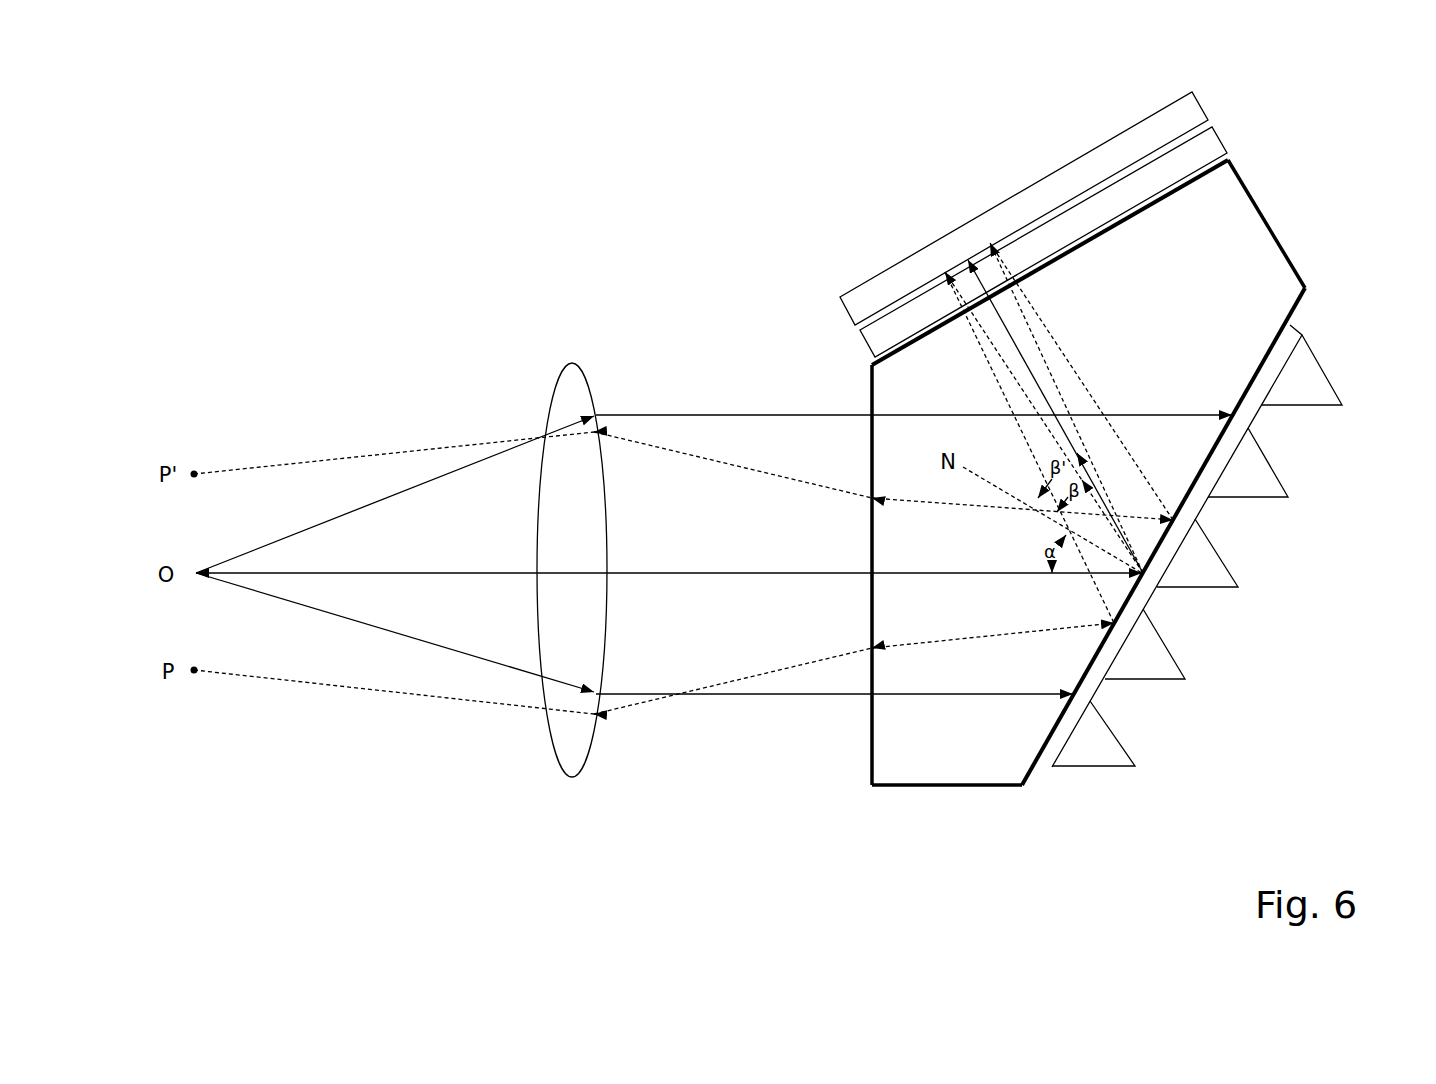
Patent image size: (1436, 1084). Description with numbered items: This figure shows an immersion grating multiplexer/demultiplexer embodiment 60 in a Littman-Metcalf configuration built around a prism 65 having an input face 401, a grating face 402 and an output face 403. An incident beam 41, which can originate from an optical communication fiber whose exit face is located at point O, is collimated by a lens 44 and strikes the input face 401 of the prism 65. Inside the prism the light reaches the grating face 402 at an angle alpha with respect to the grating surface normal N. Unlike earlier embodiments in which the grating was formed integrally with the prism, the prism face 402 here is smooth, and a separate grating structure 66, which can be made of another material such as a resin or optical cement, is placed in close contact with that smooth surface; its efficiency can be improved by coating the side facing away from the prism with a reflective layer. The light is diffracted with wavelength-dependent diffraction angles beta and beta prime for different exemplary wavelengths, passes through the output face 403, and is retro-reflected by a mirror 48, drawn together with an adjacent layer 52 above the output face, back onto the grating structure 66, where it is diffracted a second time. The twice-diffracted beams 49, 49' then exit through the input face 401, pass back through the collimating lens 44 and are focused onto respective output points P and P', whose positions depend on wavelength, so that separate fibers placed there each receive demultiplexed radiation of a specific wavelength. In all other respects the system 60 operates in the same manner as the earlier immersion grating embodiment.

The incident beam 41 is at (417, 484).
The collimating lens 44 is at (572, 778).
The mirror 48 is at (1017, 200).
The twice-diffracted beam 49 is at (654, 701).
The twice-diffracted beam 49' is at (683, 446).
The reflective layer 52 is at (1227, 143).
The immersion grating embodiment 60 is at (1096, 559).
The prism 65 is at (985, 775).
The separate grating structure 66 is at (1153, 648).
The input face 401 is at (868, 782).
The grating face 402 is at (1298, 308).
The output face 403 is at (1215, 172).